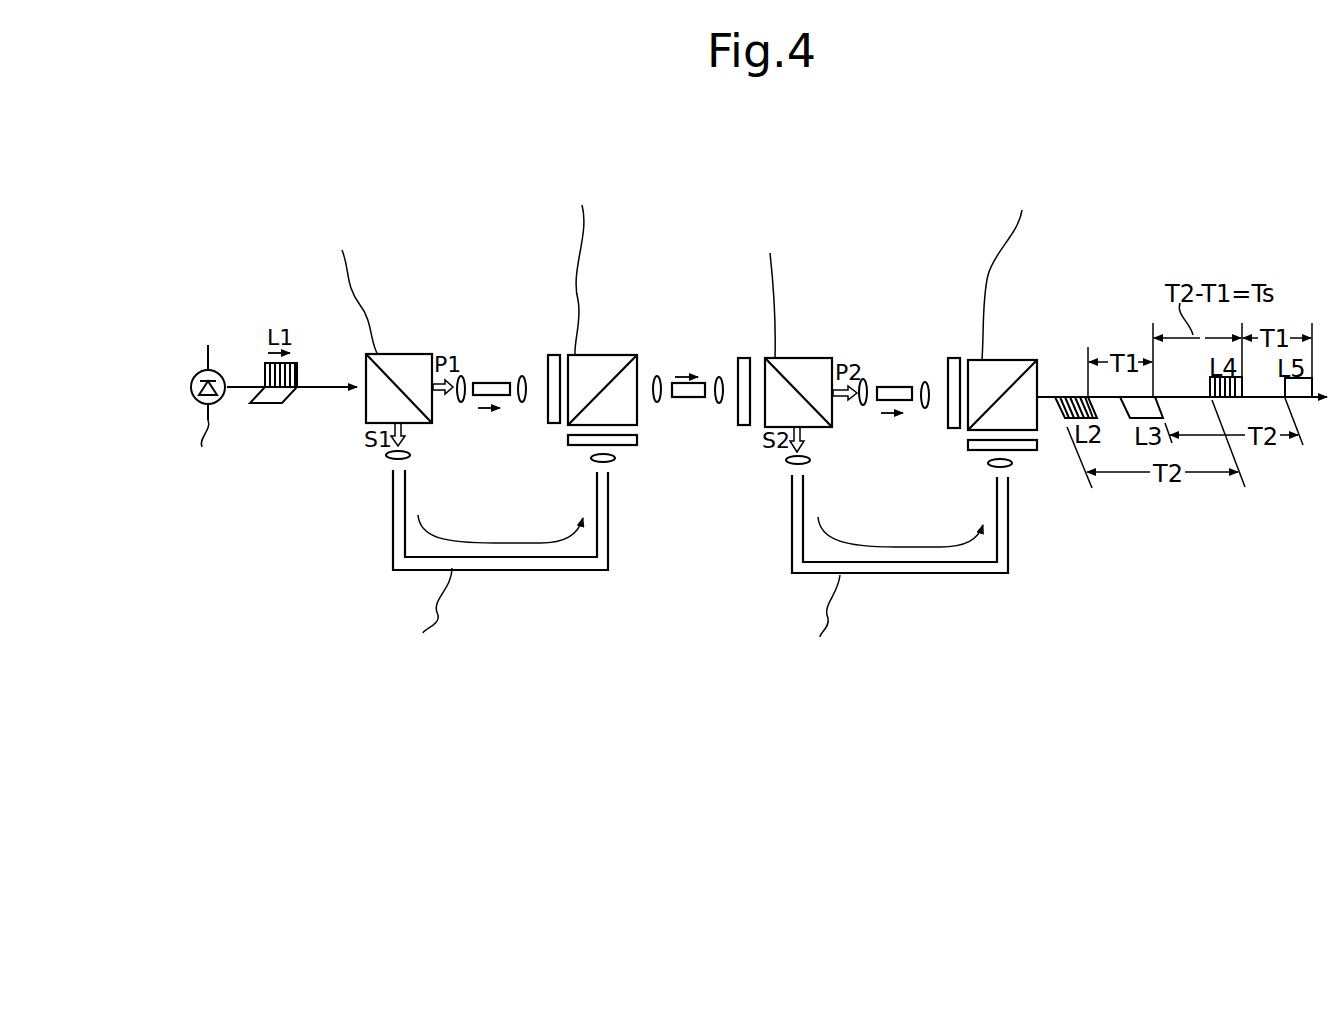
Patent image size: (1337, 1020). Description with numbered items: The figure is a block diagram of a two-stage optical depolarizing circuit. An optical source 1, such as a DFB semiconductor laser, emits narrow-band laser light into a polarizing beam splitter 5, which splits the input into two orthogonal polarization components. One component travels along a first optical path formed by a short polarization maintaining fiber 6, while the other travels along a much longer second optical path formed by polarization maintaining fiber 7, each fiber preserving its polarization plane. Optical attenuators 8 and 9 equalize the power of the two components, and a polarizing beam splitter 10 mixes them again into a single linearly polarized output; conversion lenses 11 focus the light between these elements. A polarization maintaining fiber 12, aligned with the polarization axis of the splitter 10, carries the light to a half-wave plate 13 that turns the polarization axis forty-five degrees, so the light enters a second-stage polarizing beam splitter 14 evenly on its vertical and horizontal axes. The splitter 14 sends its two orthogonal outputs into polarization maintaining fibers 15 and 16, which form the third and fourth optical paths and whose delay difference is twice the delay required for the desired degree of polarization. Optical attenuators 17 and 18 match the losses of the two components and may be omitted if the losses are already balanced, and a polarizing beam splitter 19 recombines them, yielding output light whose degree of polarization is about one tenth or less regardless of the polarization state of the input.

The optical source 1 is at (217, 377).
The polarizing beam splitter 5 is at (398, 354).
The polarization maintaining fiber 6 is at (492, 382).
The polarization maintaining fiber 7 is at (503, 570).
The optical attenuator 8 is at (552, 355).
The optical attenuator 9 is at (628, 447).
The polarizing beam splitter 10 is at (597, 355).
The conversion lens 11 is at (459, 402).
The polarization maintaining fiber 12 is at (688, 398).
The half-wave plate 13 is at (742, 358).
The polarizing beam splitter 14 is at (793, 358).
The polarization maintaining fiber 15 is at (893, 387).
The polarization maintaining fiber 16 is at (908, 568).
The optical attenuator 17 is at (953, 358).
The optical attenuator 18 is at (1030, 452).
The polarizing beam splitter 19 is at (1000, 360).